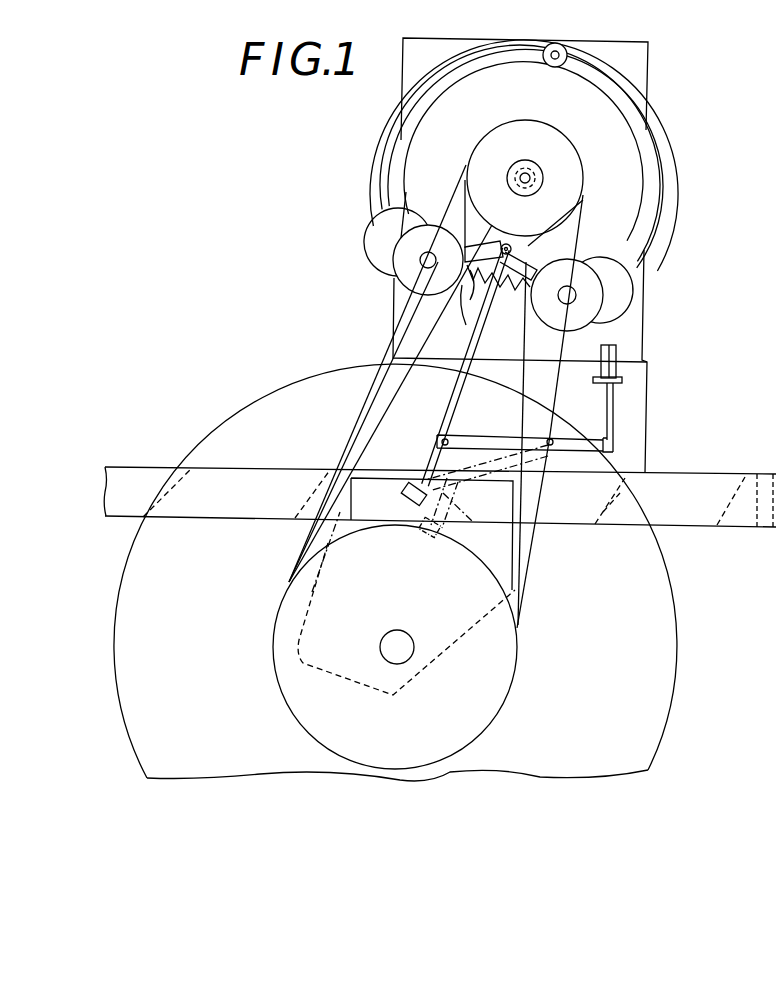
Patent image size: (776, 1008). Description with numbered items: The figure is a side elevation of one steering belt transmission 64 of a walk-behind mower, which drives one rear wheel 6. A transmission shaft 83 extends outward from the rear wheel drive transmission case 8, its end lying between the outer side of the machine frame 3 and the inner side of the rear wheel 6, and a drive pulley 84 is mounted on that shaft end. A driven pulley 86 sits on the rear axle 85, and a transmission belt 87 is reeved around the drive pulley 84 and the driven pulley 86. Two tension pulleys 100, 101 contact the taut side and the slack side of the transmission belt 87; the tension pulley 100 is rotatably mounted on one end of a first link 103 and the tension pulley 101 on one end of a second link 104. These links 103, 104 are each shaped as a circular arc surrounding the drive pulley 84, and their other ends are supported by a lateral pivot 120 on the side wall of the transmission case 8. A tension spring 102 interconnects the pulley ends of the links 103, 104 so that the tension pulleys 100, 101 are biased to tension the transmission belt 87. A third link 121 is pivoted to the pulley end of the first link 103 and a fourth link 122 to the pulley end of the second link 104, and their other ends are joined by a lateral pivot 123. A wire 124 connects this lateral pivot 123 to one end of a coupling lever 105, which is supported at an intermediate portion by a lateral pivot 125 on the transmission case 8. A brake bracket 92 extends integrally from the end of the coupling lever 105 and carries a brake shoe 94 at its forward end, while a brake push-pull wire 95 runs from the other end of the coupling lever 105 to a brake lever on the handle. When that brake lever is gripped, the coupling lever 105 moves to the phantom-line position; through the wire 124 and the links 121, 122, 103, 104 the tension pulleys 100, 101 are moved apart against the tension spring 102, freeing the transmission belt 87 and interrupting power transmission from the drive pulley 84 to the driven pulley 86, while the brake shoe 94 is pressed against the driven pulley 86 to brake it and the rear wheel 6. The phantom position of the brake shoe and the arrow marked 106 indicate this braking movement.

The machine frame 3 is at (677, 492).
The rear wheel 6 is at (677, 682).
The rear wheel drive transmission case 8 is at (643, 82).
The steering belt transmission 64 is at (359, 200).
The transmission shaft 83 is at (525, 172).
The drive pulley 84 is at (503, 136).
The rear axle 85 is at (400, 647).
The driven pulley 86 is at (497, 696).
The transmission belt 87 is at (405, 346).
The brake bracket 92 is at (430, 446).
The brake shoe 94 is at (411, 491).
The brake push-pull wire 95 is at (607, 418).
The tension pulley 100 is at (393, 256).
The tension pulley 101 is at (590, 308).
The tension spring 102 is at (390, 403).
The first link 103 is at (405, 120).
The second link 104 is at (652, 202).
The coupling lever 105 is at (492, 440).
The opening 106 is at (404, 470).
The lateral pivot 120 is at (556, 67).
The third link 121 is at (470, 236).
The fourth link 122 is at (542, 232).
The lateral pivot 123 is at (508, 244).
The wire 124 is at (492, 316).
The lateral pivot 125 is at (553, 438).